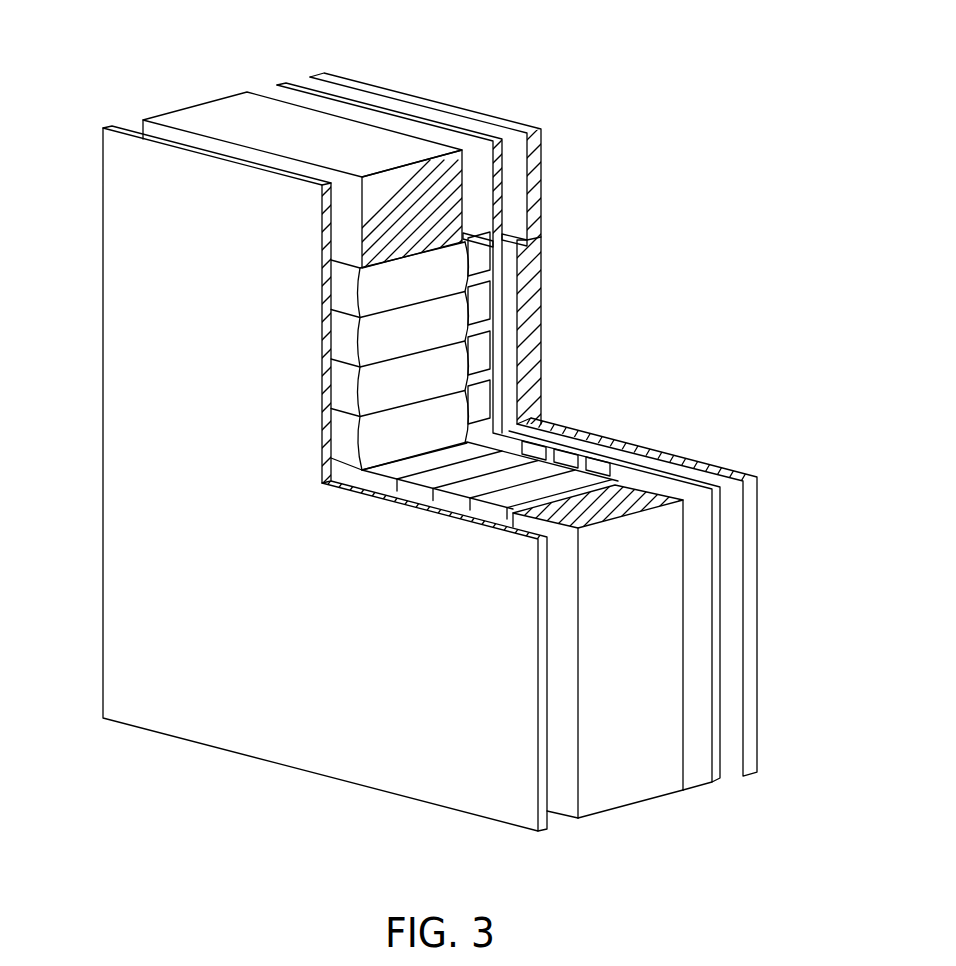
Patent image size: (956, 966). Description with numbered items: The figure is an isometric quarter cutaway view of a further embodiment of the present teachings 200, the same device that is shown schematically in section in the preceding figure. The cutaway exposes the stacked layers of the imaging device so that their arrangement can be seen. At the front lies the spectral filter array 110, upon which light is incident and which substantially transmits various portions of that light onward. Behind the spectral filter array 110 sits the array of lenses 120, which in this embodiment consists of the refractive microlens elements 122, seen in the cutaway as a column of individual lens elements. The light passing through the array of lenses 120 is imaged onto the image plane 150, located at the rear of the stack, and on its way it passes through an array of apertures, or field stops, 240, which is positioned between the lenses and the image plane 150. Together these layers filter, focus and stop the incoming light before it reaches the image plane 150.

The embodiment of the teachings 200 is at (136, 58).
The spectral filter array 110 is at (540, 832).
The array of lenses 120 is at (630, 807).
The refractive microlens elements 122 is at (413, 382).
The array of apertures 240 is at (713, 785).
The image plane 150 is at (750, 735).